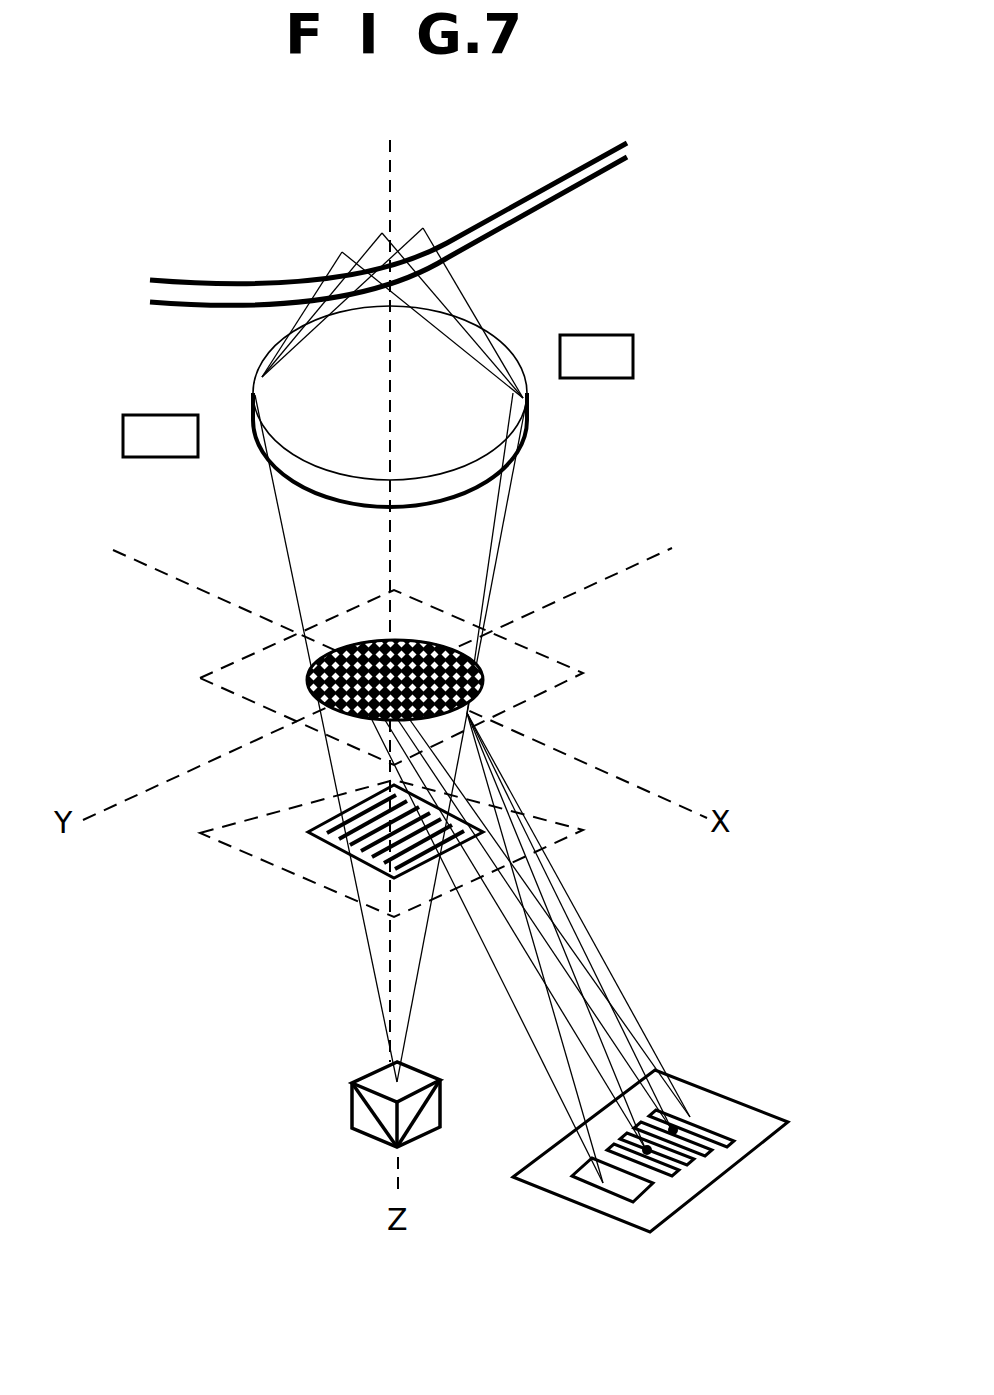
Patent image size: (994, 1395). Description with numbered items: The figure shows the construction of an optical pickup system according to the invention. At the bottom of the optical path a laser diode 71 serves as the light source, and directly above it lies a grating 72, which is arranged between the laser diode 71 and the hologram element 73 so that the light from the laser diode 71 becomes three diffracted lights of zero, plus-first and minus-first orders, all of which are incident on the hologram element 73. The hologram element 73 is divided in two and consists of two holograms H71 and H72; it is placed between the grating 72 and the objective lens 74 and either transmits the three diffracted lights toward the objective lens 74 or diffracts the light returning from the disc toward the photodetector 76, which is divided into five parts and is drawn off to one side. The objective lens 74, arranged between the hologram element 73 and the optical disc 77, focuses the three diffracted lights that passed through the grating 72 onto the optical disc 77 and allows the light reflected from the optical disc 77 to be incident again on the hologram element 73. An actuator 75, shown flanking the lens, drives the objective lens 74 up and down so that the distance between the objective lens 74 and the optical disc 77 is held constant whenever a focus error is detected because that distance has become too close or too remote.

The laser diode 71 is at (363, 1118).
The grating 72 is at (328, 840).
The hologram element divided-by-two 73 is at (483, 680).
The objective lens 74 is at (520, 398).
The actuator 75 is at (378, 397).
The photodetector divided-by-five 76 is at (735, 1105).
The optical disc 77 is at (540, 168).
The hologram H71 is at (420, 640).
The hologram H72 is at (310, 676).